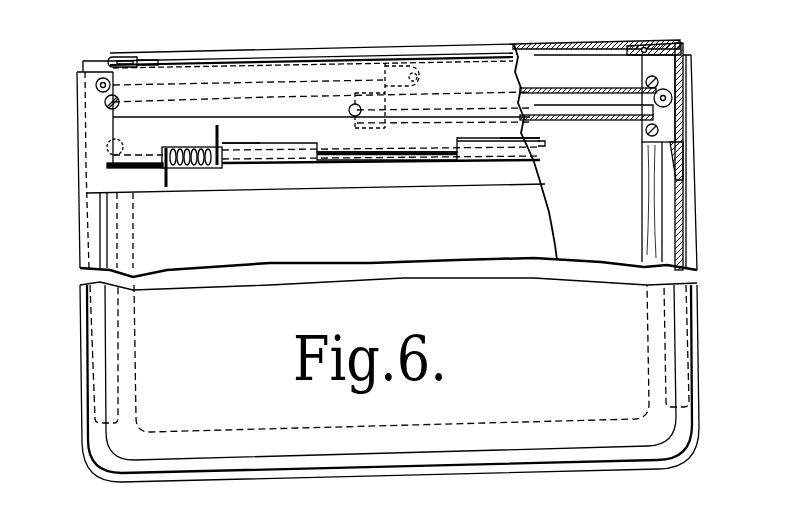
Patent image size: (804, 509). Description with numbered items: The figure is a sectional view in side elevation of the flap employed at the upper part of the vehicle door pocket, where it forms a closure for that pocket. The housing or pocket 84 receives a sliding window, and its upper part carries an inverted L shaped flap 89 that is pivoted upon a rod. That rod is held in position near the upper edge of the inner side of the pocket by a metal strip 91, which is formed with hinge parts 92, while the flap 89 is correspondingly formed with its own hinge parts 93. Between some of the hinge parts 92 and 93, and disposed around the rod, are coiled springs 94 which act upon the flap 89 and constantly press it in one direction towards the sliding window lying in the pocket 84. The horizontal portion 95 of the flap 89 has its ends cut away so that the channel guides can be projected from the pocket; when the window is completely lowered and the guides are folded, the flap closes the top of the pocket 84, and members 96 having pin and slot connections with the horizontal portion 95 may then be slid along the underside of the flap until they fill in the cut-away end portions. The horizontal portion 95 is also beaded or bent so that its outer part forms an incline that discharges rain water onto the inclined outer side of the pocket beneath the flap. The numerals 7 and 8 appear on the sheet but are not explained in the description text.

The plate 7 is at (190, 117).
The frame body 8 is at (180, 253).
The housing or pocket 84 is at (597, 110).
The inverted L shaped flap 89 is at (442, 78).
The metal strip 91 is at (318, 162).
The hinge parts 92 is at (252, 148).
The hinge parts 93 is at (380, 153).
The coiled springs 94 is at (198, 147).
The horizontal portion 95 is at (157, 58).
The members 96 is at (677, 43).